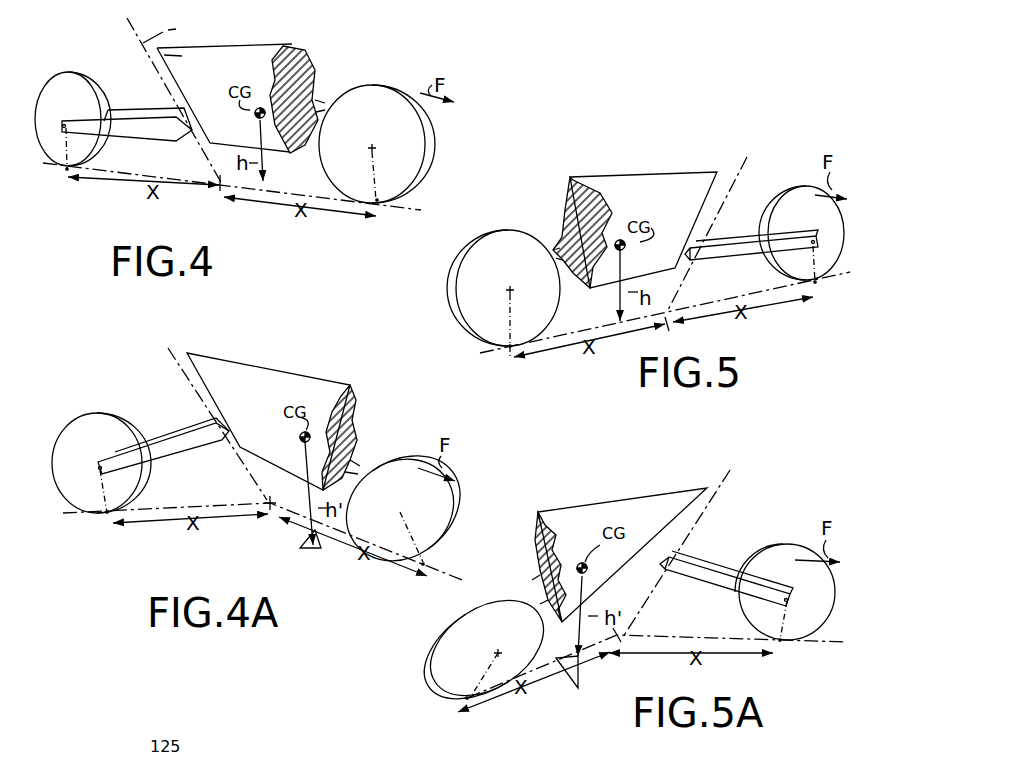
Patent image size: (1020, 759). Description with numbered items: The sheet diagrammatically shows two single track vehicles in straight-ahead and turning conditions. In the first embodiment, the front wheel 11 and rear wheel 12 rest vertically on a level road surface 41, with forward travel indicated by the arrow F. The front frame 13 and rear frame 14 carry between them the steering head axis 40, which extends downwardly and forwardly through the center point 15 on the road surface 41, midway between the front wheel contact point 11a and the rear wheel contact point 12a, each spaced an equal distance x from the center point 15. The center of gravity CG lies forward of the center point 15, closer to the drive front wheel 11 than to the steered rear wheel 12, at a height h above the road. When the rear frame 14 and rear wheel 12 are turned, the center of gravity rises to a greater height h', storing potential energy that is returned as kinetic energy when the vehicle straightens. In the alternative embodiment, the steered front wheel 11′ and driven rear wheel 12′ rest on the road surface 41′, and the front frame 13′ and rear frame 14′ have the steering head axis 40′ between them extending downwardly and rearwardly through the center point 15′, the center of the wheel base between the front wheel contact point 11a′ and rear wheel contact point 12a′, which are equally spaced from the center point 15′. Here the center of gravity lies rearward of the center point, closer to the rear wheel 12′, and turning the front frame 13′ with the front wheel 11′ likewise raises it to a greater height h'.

In FIG. 4, the front wheel 11 is at (418, 143).
In FIG. 4A, the front wheel 11 is at (402, 513).
In FIG. 4, the front wheel contact point 11a is at (379, 199).
In FIG. 4A, the front wheel contact point 11a is at (424, 562).
In FIG. 4, the rear wheel 12 is at (68, 82).
In FIG. 4A, the rear wheel 12 is at (92, 453).
In FIG. 4, the rear wheel contact point 12a is at (67, 170).
In FIG. 4A, the rear wheel contact point 12a is at (107, 520).
In FIG. 4, the front frame 13 is at (298, 44).
In FIG. 4A, the front frame 13 is at (272, 384).
In FIG. 4, the rear frame 14 is at (143, 108).
In FIG. 4A, the rear frame 14 is at (179, 420).
In FIG. 4, the center point 15 is at (216, 180).
In FIG. 4A, the center point 15 is at (263, 503).
In FIG. 4, the steering head axis 40 is at (174, 99).
In FIG. 4A, the steering head axis 40 is at (180, 368).
In FIG. 4, the road surface 41 is at (128, 188).
In FIG. 4A, the road surface 41 is at (191, 505).
In FIG. 5, the front wheel 11′ is at (798, 196).
In FIG. 5A, the front wheel 11′ is at (778, 550).
In FIG. 5, the front wheel contact point 11a′ is at (818, 305).
In FIG. 5A, the front wheel contact point 11a′ is at (790, 650).
In FIG. 5, the rear wheel 12′ is at (508, 236).
In FIG. 5A, the rear wheel 12′ is at (500, 598).
In FIG. 5, the rear wheel contact point 12a′ is at (508, 358).
In FIG. 5A, the rear wheel contact point 12a′ is at (465, 700).
In FIG. 5, the front frame 13′ is at (743, 236).
In FIG. 5A, the front frame 13′ is at (723, 561).
In FIG. 5, the rear frame 14′ is at (668, 190).
In FIG. 5A, the rear frame 14′ is at (660, 506).
In FIG. 5, the center point 15′ is at (672, 319).
In FIG. 5A, the center point 15′ is at (630, 634).
In FIG. 5, the steering head axis 40′ is at (742, 160).
In FIG. 5A, the steering head axis 40′ is at (738, 475).
In FIG. 5, the ground line (second embodiment) 41′ is at (605, 325).
In FIG. 5A, the ground line (second embodiment) 41′ is at (717, 638).